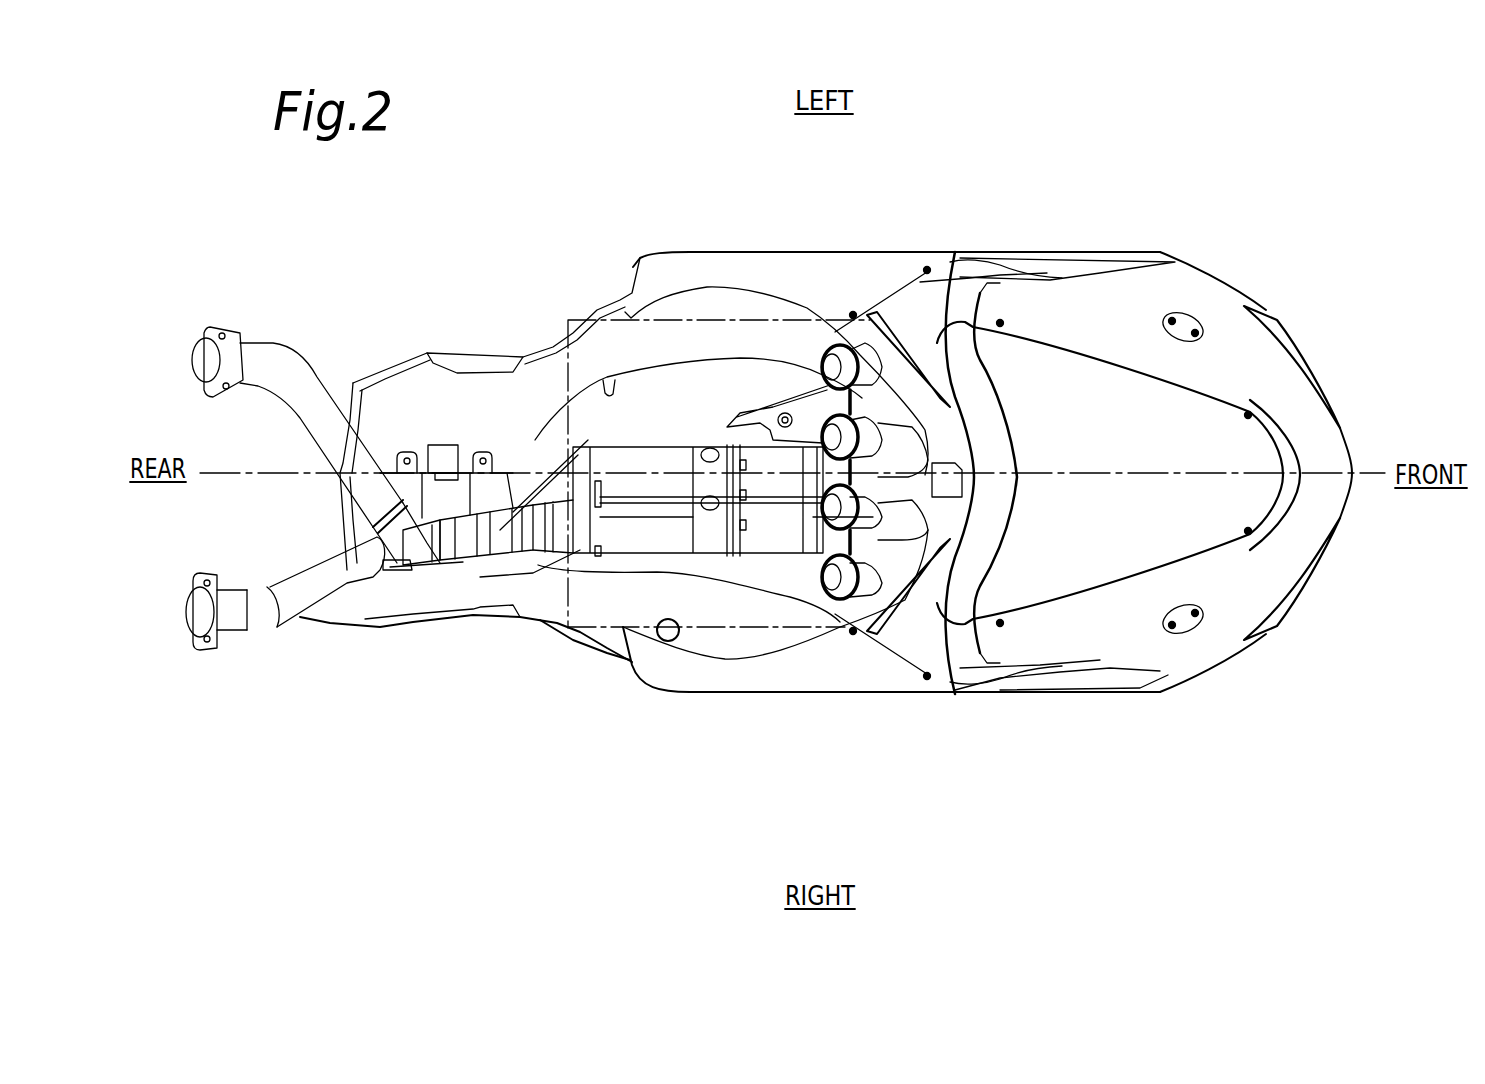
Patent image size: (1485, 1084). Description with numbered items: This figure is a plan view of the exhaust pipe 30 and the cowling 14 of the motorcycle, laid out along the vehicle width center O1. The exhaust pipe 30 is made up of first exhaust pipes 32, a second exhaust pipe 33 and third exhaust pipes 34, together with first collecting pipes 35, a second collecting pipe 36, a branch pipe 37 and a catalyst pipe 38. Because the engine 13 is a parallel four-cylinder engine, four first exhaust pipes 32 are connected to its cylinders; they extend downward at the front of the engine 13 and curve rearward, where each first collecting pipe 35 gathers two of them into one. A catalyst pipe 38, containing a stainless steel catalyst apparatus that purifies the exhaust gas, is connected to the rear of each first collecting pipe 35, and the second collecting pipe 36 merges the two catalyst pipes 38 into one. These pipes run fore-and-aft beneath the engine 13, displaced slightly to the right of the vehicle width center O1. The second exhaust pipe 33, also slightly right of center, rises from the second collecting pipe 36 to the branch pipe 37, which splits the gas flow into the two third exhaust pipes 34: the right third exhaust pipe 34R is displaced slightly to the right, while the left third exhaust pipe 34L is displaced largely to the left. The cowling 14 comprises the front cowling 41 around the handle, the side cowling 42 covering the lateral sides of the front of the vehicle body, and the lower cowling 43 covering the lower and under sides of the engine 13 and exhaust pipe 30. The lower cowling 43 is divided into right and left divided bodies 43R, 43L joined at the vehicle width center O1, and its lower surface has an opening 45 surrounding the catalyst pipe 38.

The cowling 14 is at (1219, 248).
The front cowling 41 is at (1187, 288).
The vehicle width center O1 is at (1315, 472).
The side cowling 42 is at (865, 272).
The engine 13 is at (748, 320).
The opening 45 is at (612, 378).
The lower cowling 43 is at (522, 355).
The left divided body 43L is at (478, 360).
The right divided body 43R is at (520, 627).
The exhaust pipe 30 is at (920, 797).
The third exhaust pipes 34 is at (313, 535).
The left third exhaust pipe 34L is at (280, 357).
The right third exhaust pipe 34R is at (257, 633).
The branch pipe 37 is at (397, 570).
The second exhaust pipe 33 is at (467, 553).
The second collecting pipe 36 is at (557, 547).
The catalyst pipe 38 is at (668, 457).
The first collecting pipe 35 is at (767, 447).
The first exhaust pipes 32 is at (910, 415).